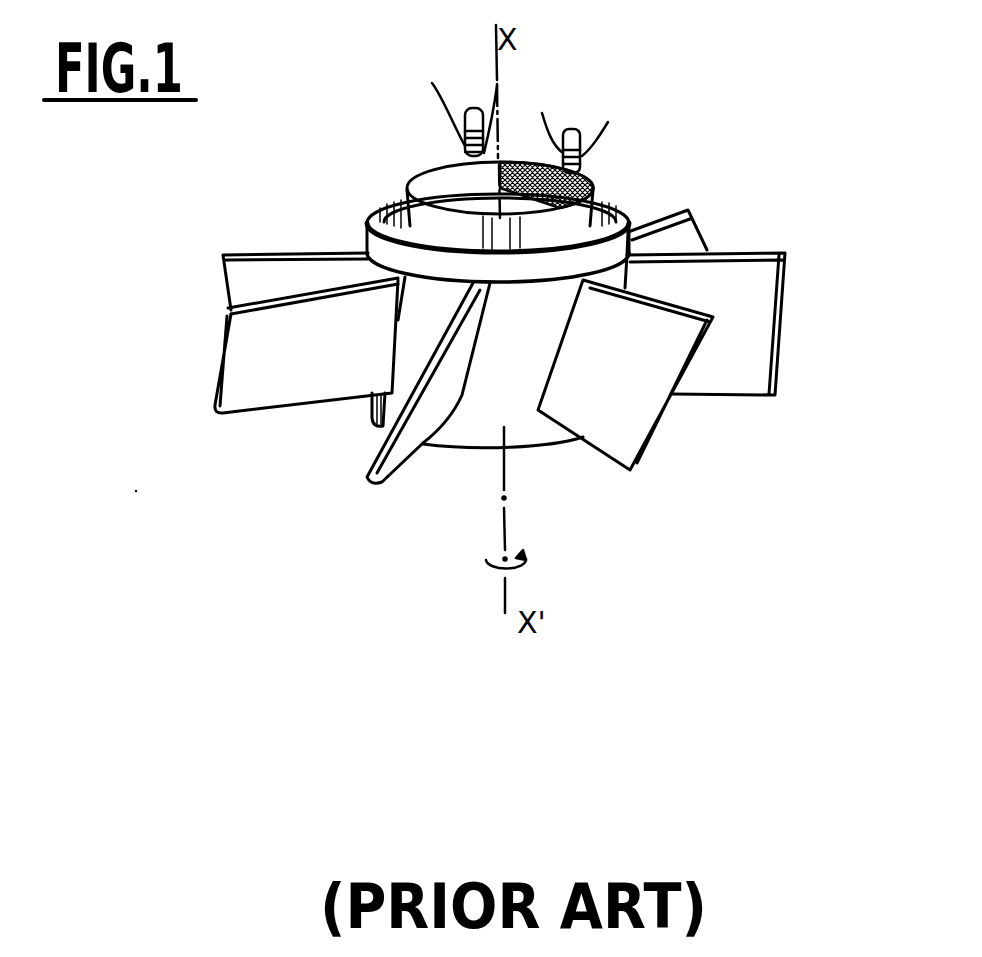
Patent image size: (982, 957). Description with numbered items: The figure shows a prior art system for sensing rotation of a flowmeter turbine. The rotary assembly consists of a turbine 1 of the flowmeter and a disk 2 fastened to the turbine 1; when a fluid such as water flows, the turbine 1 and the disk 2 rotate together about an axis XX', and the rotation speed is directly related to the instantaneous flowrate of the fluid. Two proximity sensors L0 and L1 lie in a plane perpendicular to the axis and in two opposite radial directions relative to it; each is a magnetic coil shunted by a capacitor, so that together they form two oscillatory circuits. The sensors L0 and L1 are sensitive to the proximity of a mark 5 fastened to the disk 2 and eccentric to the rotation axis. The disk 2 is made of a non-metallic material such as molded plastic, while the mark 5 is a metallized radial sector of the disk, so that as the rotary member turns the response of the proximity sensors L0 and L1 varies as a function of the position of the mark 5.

The turbine 1 is at (767, 314).
The disk 2 is at (413, 175).
The mark 5 is at (596, 174).
The proximity sensor L0 is at (590, 155).
The proximity sensor L1 is at (462, 152).